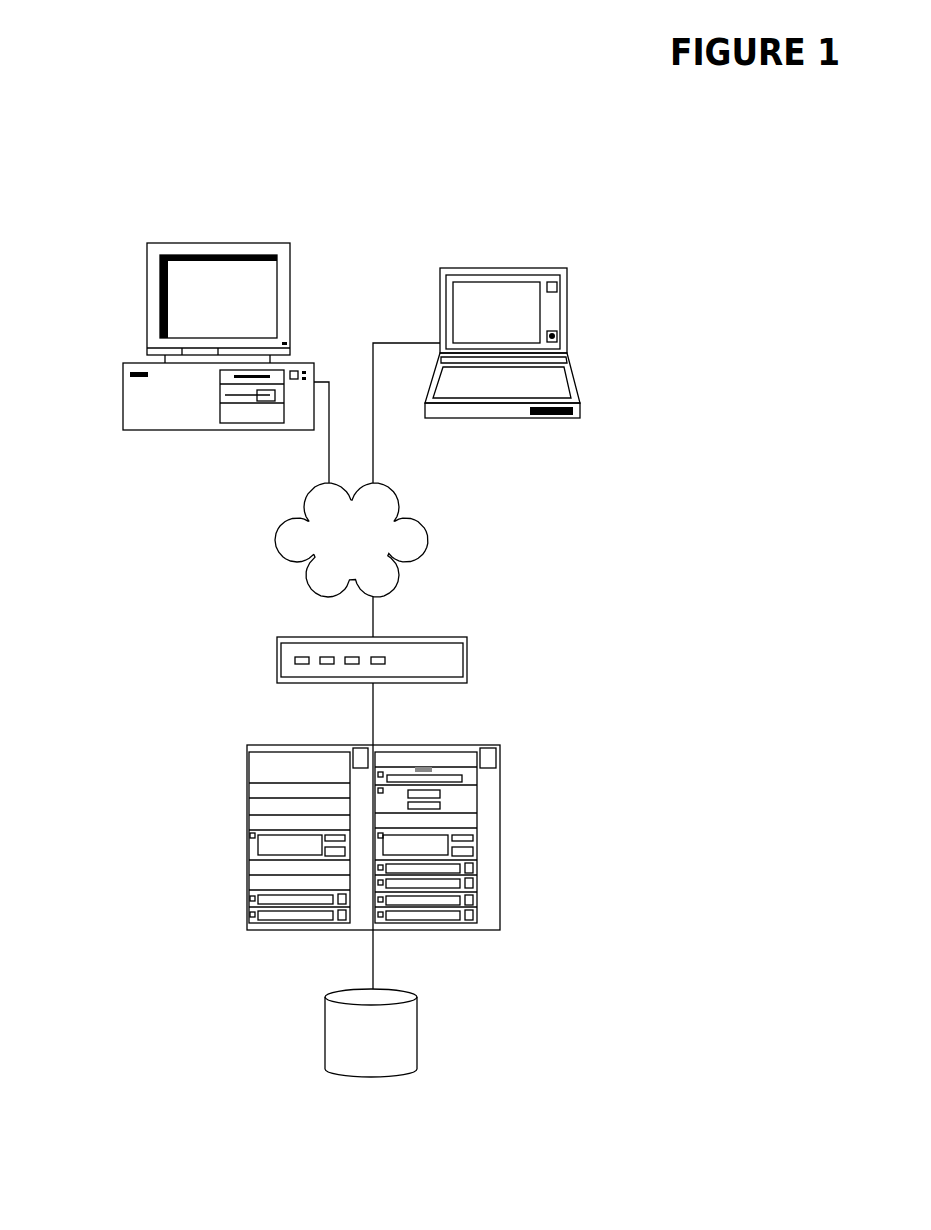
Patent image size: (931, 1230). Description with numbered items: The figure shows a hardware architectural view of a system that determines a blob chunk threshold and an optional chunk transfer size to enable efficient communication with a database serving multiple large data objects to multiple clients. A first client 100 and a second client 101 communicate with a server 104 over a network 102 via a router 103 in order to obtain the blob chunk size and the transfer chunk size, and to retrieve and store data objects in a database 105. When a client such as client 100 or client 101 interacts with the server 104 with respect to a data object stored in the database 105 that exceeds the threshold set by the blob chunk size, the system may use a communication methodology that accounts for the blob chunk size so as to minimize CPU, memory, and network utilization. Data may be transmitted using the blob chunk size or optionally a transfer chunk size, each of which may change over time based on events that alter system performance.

The client 100 is at (123, 380).
The client 101 is at (565, 348).
The network 102 is at (275, 543).
The router 103 is at (277, 670).
The server 104 is at (247, 838).
The database 105 is at (325, 1045).